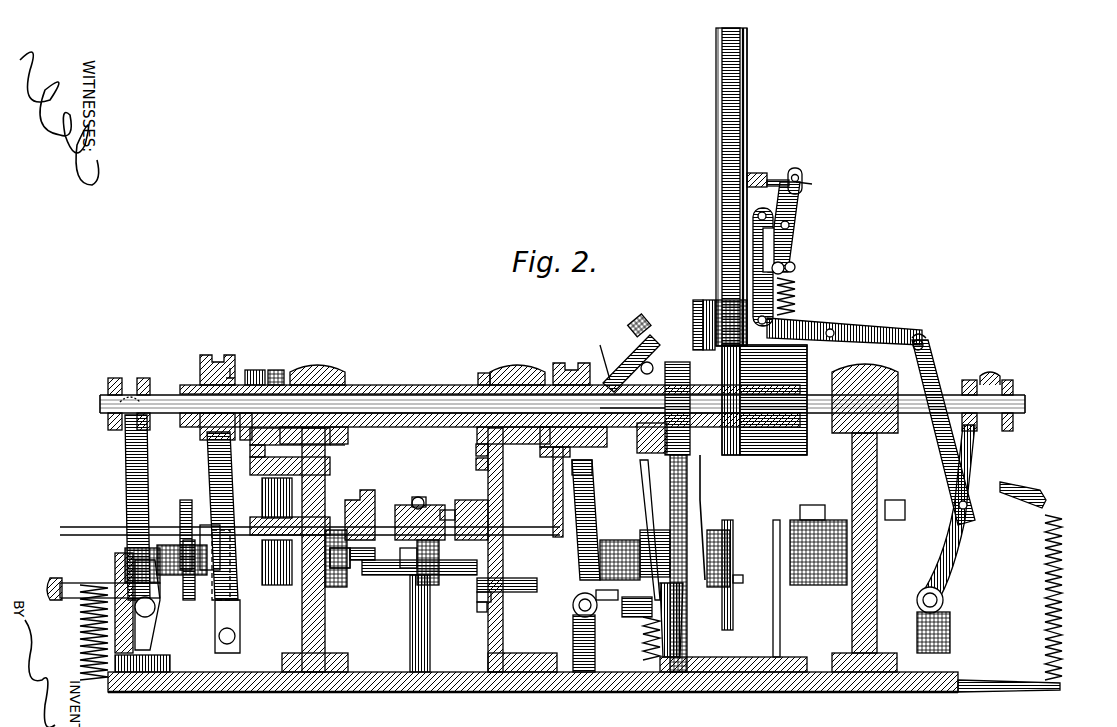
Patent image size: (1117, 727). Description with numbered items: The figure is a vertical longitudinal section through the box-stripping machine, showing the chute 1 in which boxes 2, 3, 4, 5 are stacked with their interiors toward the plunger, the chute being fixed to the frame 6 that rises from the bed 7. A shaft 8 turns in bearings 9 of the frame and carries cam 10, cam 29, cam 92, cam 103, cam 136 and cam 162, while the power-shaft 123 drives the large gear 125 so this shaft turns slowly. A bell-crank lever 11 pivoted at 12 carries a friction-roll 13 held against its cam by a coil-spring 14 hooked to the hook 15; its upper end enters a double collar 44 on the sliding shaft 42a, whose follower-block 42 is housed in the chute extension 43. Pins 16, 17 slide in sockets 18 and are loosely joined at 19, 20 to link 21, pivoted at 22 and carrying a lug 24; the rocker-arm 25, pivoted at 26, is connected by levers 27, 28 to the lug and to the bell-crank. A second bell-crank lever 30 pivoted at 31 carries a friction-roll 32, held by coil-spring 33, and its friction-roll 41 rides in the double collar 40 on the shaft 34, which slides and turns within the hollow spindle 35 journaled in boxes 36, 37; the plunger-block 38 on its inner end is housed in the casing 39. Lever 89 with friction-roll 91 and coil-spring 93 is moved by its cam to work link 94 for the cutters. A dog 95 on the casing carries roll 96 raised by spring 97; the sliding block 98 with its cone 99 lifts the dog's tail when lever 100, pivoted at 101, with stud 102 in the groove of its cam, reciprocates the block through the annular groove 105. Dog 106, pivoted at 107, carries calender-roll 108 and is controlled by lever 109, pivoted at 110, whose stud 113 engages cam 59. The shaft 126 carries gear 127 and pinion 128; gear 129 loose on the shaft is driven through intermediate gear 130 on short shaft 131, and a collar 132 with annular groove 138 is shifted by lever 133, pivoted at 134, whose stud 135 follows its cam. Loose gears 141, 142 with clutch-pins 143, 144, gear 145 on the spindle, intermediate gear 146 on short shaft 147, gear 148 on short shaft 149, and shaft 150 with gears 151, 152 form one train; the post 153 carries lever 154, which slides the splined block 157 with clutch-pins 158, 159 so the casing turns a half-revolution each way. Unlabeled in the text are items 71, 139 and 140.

The chute 1 is at (716, 182).
The box 2 is at (731, 400).
The box 3 is at (718, 210).
The box 4 is at (722, 132).
The box 5 is at (718, 52).
The frame 6 is at (325, 470).
The bed 7 is at (622, 692).
The shaft 8 is at (150, 545).
The bearings 9 is at (336, 590).
The cam 10 is at (808, 505).
The bell-crank lever 11 is at (978, 572).
The pivot 12 is at (945, 606).
The friction-roll 13 is at (810, 585).
The coil-spring 14 is at (1062, 593).
The hook 15 is at (1035, 492).
The pin 16 is at (793, 170).
The pin 17 is at (734, 300).
The sockets 18 is at (762, 173).
The loose connection 19 is at (812, 184).
The loose connection 20 is at (796, 267).
The link 21 is at (795, 212).
The pivot 22 is at (790, 226).
The lug 24 is at (766, 259).
The rocker-arm 25 is at (872, 331).
The pivot 26 is at (831, 329).
The lever 27 is at (775, 255).
The lever 28 is at (950, 458).
The cam 29 is at (185, 500).
The bell-crank lever 30 is at (128, 506).
The pivot 31 is at (148, 612).
The friction-roll 32 is at (190, 602).
The coil-spring 33 is at (80, 632).
The shaft 34 is at (392, 397).
The hollow spindle 35 is at (432, 395).
The box 36 is at (312, 370).
The box 37 is at (514, 370).
The plunger-block 38 is at (677, 408).
The casing 39 is at (637, 448).
The double collar 40 is at (112, 380).
The friction-roll 41 is at (128, 392).
The follower-block 42 is at (764, 400).
The sliding shaft 42a is at (940, 385).
The extension 43 is at (840, 435).
The double collar 44 is at (1012, 390).
The cam 59 is at (734, 520).
The collar 71 is at (715, 587).
The lever 89 is at (683, 622).
The friction-roll 91 is at (630, 617).
The cam 92 is at (643, 551).
The coil-spring 93 is at (643, 645).
The link 94 is at (652, 470).
The dog 95 is at (628, 350).
The roll 96 is at (648, 318).
The spring 97 is at (640, 368).
The block 98 is at (562, 363).
The cone 99 is at (580, 450).
The lever 100 is at (588, 492).
The pivot 101 is at (573, 608).
The stud 102 is at (612, 550).
The cam 103 is at (604, 598).
The annular groove 105 is at (580, 358).
The dog 106 is at (690, 312).
The pivot 107 is at (632, 400).
The calender-roll 108 is at (705, 300).
The lever 109 is at (704, 517).
The pivot 110 is at (700, 425).
The stud 113 is at (748, 580).
The power-shaft 123 is at (66, 570).
The gear 125 is at (270, 588).
The shaft 126 is at (372, 545).
The gear 127 is at (258, 485).
The pinion 128 is at (227, 569).
The gear 129 is at (254, 370).
The intermediate gear 130 is at (246, 447).
The short shaft 131 is at (340, 450).
The collar 132 is at (218, 372).
The lever 133 is at (210, 448).
The pivot 134 is at (222, 640).
The stud 135 is at (157, 548).
The cam 136 is at (208, 525).
The annular groove 138 is at (232, 368).
The ratchet 139 is at (276, 372).
The hub 140 is at (240, 426).
The loose gear 141 is at (360, 498).
The loose gear 142 is at (470, 500).
The clutch-pin 143 is at (345, 585).
The clutch-pin 144 is at (446, 510).
The gear 145 is at (483, 372).
The intermediate gear 146 is at (476, 446).
The short shaft 147 is at (476, 462).
The gear 148 is at (484, 602).
The short shaft 149 is at (507, 585).
The shaft 150 is at (452, 575).
The gear 151 is at (350, 590).
The gear 152 is at (480, 612).
The post 153 is at (430, 652).
The lever 154 is at (416, 500).
The block 157 is at (410, 590).
The clutch-pin 158 is at (418, 580).
The clutch-pin 159 is at (420, 497).
The cam 162 is at (400, 520).